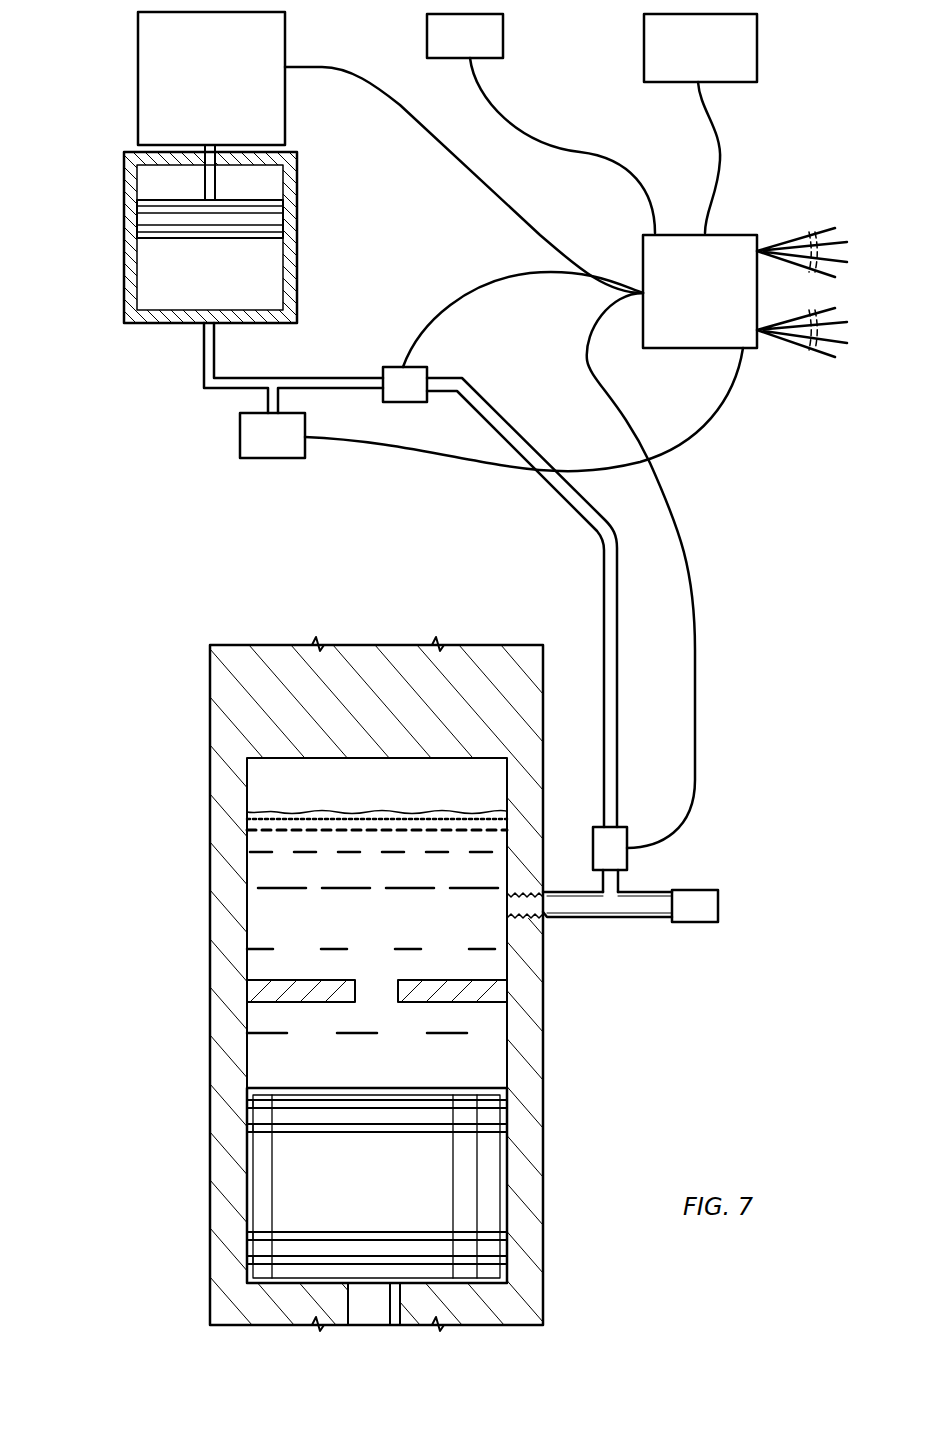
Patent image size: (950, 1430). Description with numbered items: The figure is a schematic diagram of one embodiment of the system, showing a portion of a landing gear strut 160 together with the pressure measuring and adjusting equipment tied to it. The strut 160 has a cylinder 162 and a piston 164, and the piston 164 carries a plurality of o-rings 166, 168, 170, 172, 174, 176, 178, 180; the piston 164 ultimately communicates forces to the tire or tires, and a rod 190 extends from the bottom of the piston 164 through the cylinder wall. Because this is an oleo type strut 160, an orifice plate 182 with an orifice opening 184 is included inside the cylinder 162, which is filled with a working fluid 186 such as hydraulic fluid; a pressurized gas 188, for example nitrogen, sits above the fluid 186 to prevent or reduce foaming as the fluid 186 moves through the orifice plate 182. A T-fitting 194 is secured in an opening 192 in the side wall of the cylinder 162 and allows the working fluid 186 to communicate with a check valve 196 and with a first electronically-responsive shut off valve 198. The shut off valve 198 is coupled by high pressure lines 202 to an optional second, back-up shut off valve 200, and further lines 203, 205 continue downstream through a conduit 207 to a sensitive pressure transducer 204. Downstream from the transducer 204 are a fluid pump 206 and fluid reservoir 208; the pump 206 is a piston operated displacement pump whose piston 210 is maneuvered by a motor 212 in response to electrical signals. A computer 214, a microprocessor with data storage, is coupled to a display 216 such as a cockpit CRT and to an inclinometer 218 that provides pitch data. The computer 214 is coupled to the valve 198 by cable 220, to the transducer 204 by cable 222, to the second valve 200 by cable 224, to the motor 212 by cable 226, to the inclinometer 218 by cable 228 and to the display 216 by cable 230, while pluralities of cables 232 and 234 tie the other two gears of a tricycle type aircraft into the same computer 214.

The landing gear strut 160 is at (438, 695).
The cylinder 162 is at (214, 849).
The piston 164 is at (397, 1204).
The ring 166 is at (507, 1108).
The ring 168 is at (507, 1130).
The ring 170 is at (507, 1237).
The ring 172 is at (507, 1262).
The ring 174 is at (247, 1262).
The ring 176 is at (247, 1237).
The ring 178 is at (247, 1129).
The ring 180 is at (247, 1107).
The orifice plate 182 is at (248, 985).
The orifice opening 184 is at (373, 1005).
The working fluid 186 is at (397, 932).
The pressurized gas 188 is at (397, 799).
The piston rod 190 is at (373, 1327).
The wall opening 192 is at (525, 920).
The T-fitting 194 is at (650, 925).
The check valve 196 is at (718, 905).
The first electronically-responsive shut off valve 198 is at (595, 828).
The second electronically-responsive shut off valve 200 is at (397, 367).
The high pressure hosing or lines 202 is at (604, 601).
The conduit 203 is at (320, 390).
The pressure transducer 204 is at (293, 450).
The conduit 205 is at (284, 378).
The fluid pump 206 is at (117, 183).
The conduit 207 is at (204, 348).
The fluid reservoir 208 is at (117, 285).
The piston 210 is at (283, 220).
The motor 212 is at (232, 92).
The computer 214 is at (722, 306).
The display 216 is at (722, 62).
The inclinometer 218 is at (486, 50).
The cable 220 is at (695, 645).
The cable 222 is at (690, 443).
The cable 224 is at (456, 285).
The cable 226 is at (360, 71).
The cable 228 is at (540, 140).
The cable 230 is at (710, 135).
The plurality of cables 232 is at (812, 232).
The plurality of cables 234 is at (812, 356).